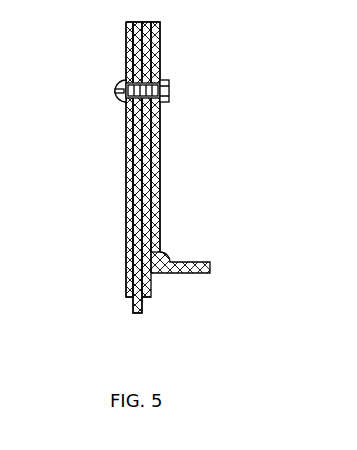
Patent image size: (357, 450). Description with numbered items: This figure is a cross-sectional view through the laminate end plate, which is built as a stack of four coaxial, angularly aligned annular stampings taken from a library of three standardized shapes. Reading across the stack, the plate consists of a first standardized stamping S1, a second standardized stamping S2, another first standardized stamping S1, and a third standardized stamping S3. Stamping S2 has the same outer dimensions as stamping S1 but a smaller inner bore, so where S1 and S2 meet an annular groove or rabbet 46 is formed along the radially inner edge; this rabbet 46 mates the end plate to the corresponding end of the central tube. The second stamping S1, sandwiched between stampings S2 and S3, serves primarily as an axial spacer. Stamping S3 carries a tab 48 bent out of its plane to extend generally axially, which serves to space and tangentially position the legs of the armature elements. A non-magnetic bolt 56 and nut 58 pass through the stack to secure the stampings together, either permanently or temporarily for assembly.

The rabbet 46 is at (166, 201).
The tab 48 is at (212, 261).
The bolt 56 is at (120, 75).
The nut 58 is at (168, 105).
The first standardized stamping S1 is at (125, 183).
The second standardized stamping S2 is at (134, 313).
The third standardized stamping S3 is at (161, 200).